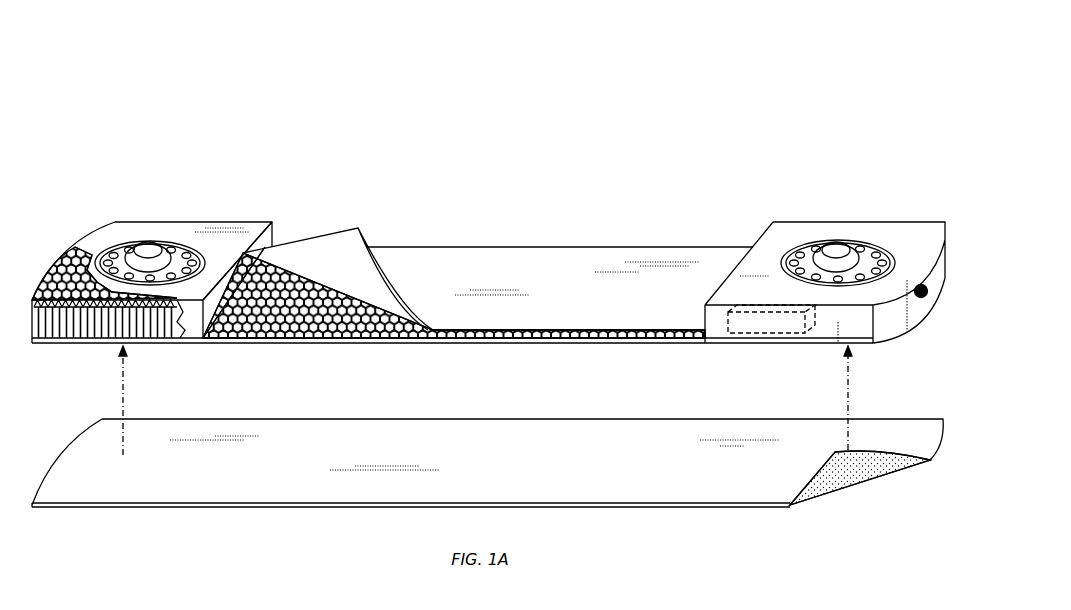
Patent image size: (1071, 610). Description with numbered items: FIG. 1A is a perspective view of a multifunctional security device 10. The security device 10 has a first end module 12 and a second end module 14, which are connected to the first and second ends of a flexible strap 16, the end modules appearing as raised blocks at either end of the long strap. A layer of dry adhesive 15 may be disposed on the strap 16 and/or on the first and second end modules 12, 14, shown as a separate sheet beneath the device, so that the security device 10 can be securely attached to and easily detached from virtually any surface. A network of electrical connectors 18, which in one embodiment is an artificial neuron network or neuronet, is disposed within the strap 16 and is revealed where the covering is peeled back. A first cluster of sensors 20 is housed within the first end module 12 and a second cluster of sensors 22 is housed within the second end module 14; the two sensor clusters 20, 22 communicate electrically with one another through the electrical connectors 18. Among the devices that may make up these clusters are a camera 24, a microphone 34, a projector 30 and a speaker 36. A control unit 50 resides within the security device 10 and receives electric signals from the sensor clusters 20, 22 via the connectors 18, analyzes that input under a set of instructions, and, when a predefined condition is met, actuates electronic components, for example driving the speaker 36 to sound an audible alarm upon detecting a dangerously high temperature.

The multifunctional security device 10 is at (228, 62).
The first end module 12 is at (163, 222).
The second end module 14 is at (838, 222).
The layer of dry adhesive 15 is at (696, 507).
The flexible strap 16 is at (507, 247).
The network of electrical connectors 18 is at (296, 333).
The first cluster of sensors 20 is at (113, 236).
The second cluster of sensors 22 is at (795, 240).
The camera 24 is at (167, 243).
The projector 30 is at (918, 284).
The microphone 34 is at (266, 233).
The speaker 36 is at (870, 243).
The control unit 50 is at (765, 333).